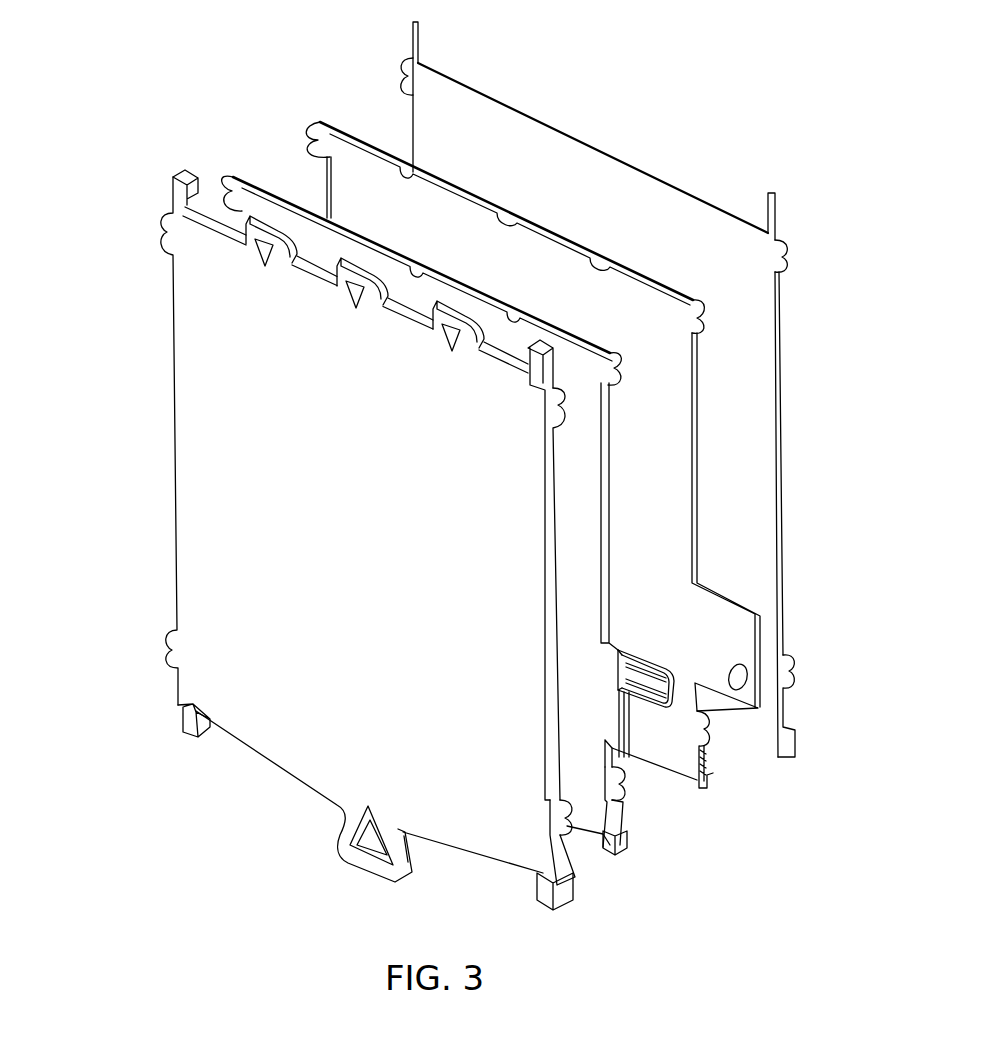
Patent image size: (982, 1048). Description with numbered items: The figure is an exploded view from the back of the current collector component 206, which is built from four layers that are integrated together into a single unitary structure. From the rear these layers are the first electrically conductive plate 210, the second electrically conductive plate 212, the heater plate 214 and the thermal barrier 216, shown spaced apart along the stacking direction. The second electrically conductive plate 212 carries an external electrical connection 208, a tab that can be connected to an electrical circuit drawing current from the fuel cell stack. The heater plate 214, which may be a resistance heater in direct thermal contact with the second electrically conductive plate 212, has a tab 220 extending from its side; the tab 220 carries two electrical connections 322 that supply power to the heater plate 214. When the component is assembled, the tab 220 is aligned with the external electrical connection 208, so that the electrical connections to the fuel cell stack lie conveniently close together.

The current collector component 206 is at (108, 421).
The external electrical connection 208 is at (733, 600).
The first electrically conductive plate 210 is at (413, 120).
The second electrically conductive plate 212 is at (327, 177).
The heater plate 214 is at (247, 177).
The thermal barrier 216 is at (173, 298).
The tab 220 is at (673, 672).
The electrical connections 322 is at (657, 675).